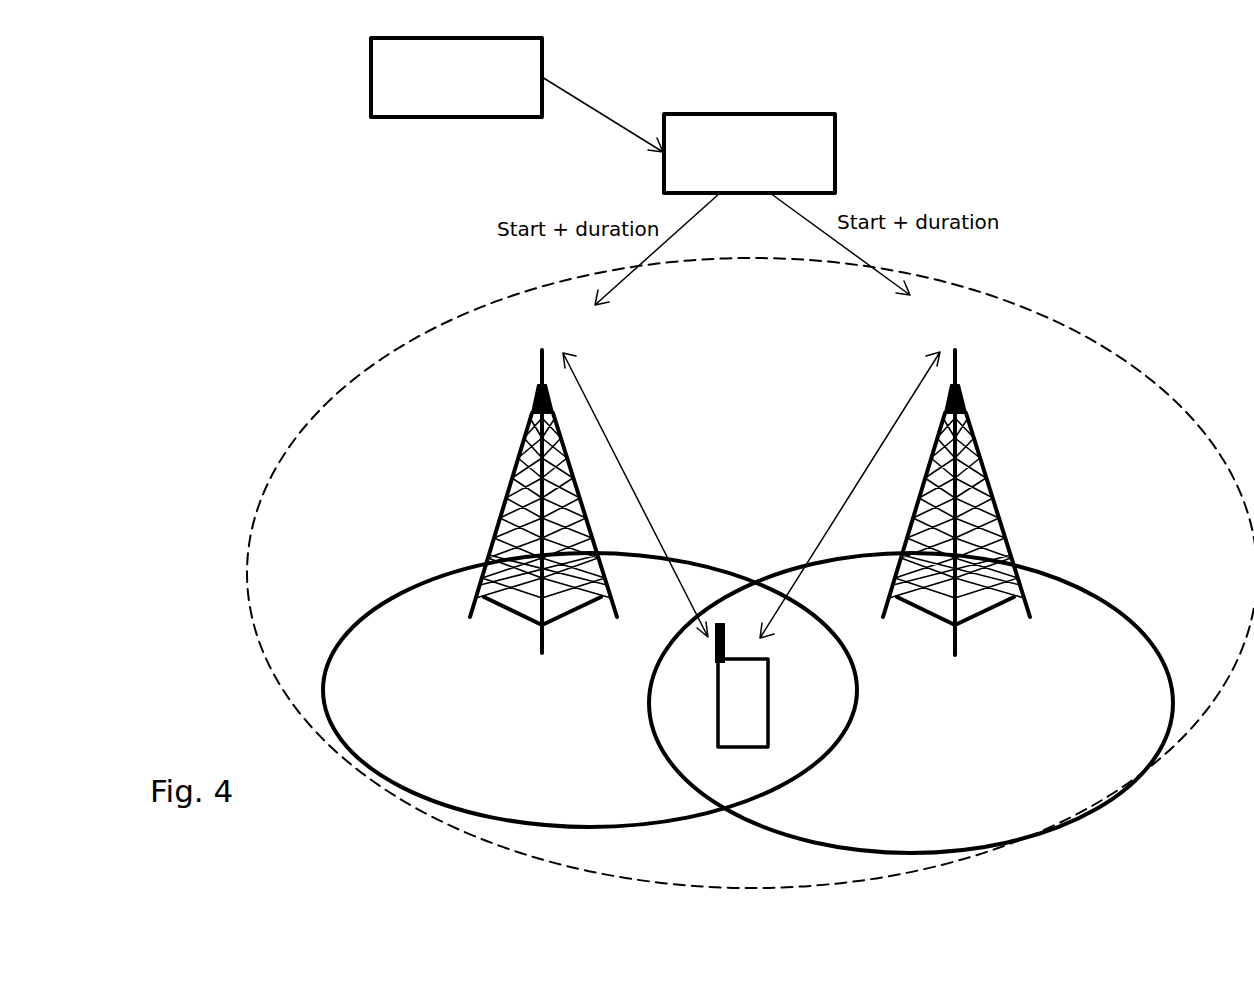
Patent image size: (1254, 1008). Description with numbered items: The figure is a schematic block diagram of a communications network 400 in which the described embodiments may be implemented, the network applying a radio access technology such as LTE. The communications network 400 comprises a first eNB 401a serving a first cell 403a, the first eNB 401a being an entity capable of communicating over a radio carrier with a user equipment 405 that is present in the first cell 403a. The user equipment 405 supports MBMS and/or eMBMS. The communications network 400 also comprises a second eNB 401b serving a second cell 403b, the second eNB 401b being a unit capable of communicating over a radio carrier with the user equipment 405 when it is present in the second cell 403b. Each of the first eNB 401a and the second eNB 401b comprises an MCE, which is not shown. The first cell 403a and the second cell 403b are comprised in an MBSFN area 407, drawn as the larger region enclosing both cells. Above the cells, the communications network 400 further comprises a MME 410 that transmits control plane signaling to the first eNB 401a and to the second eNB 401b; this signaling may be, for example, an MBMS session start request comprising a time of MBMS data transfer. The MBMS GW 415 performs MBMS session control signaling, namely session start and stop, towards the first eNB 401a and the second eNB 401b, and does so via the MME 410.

The communications network 400 is at (292, 247).
The first eNB 401a is at (522, 453).
The second eNB 401b is at (1000, 527).
The first cell 403a is at (355, 620).
The second cell 403b is at (1118, 607).
The user equipment 405 is at (718, 728).
The MBSFN area 407 is at (1117, 345).
The MME 410 is at (835, 115).
The MBMS GW 415 is at (435, 117).